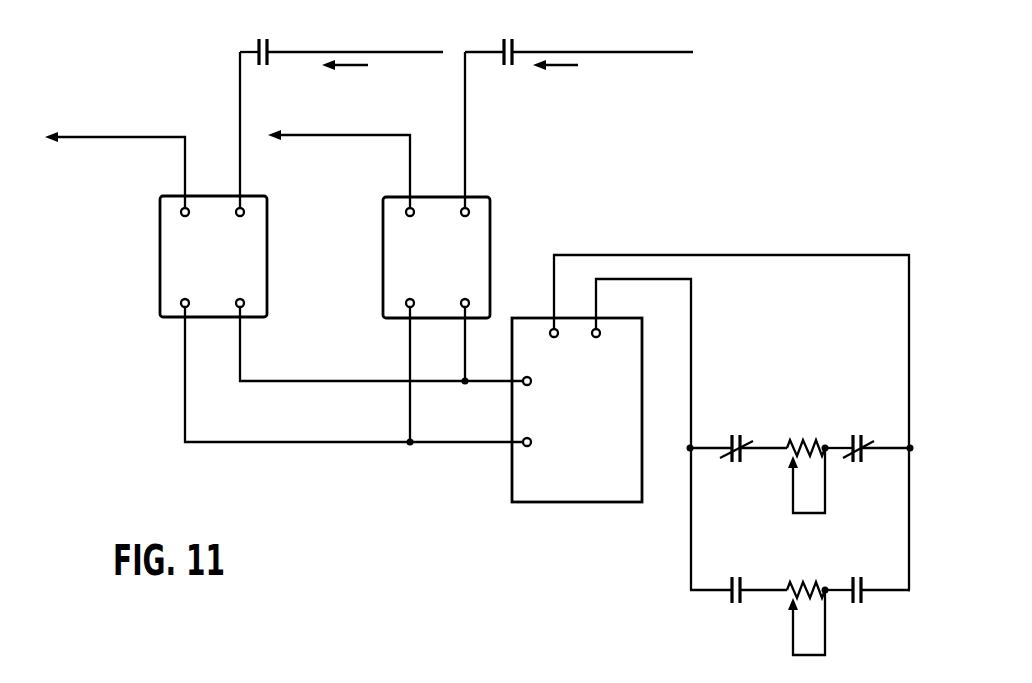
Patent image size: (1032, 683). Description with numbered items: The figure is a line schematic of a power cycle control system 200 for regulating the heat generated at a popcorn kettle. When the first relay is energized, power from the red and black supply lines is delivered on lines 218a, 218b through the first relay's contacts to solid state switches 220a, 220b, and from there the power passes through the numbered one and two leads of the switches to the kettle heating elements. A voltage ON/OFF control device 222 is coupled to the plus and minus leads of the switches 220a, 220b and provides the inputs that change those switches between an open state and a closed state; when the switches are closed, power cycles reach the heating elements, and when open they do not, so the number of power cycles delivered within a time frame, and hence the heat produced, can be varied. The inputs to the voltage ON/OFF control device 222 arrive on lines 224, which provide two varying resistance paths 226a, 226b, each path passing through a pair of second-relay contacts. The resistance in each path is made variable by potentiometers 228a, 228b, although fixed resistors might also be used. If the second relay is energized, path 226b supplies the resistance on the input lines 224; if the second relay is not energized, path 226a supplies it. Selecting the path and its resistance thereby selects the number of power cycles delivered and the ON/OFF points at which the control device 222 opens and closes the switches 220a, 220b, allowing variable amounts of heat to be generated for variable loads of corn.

The power cycle control system 200 is at (727, 152).
The power line 218a is at (466, 171).
The power line 218b is at (242, 182).
The solid state switch 220a is at (483, 224).
The solid state switch 220b is at (258, 271).
The voltage ON/OFF control device 222 is at (570, 502).
The input lines 224 is at (662, 279).
The varying resistance path 226a is at (901, 443).
The varying resistance path 226b is at (897, 592).
The potentiometer 228a is at (790, 443).
The potentiometer 228b is at (787, 592).